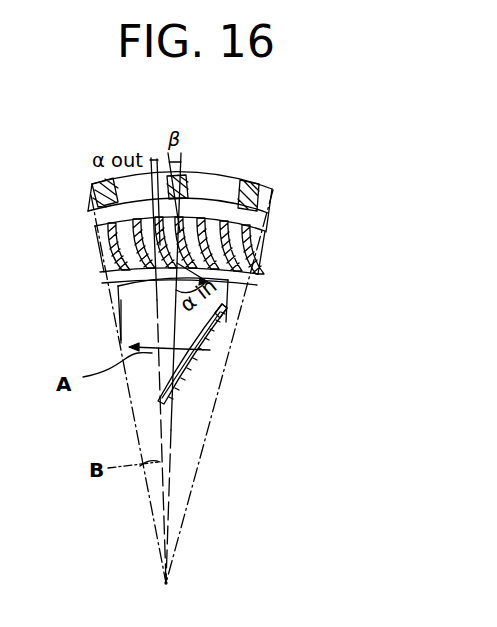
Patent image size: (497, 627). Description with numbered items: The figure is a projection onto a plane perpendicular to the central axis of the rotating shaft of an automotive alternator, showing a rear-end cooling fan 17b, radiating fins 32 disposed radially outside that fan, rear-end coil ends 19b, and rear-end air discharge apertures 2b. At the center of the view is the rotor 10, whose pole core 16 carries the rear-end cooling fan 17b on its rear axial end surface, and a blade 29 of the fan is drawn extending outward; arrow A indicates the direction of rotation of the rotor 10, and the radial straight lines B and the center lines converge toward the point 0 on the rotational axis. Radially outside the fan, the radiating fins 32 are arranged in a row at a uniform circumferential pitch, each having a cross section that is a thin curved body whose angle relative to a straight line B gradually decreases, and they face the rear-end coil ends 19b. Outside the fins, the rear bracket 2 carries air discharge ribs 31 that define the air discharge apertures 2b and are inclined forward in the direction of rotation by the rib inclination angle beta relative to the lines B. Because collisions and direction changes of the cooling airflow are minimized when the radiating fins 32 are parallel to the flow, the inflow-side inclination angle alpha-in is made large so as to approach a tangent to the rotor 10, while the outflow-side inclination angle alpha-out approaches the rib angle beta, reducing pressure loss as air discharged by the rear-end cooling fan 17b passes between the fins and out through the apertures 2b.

The rear bracket 2 is at (277, 193).
The air discharge apertures 2b is at (213, 186).
The air discharge ribs 31 is at (250, 182).
The radiating fins 32 is at (257, 247).
The rear-end coil ends 19b is at (93, 234).
The rotor 10 is at (119, 294).
The pole core 16 is at (133, 315).
The blade 29 is at (228, 316).
The rear-end cooling fan 17b is at (185, 362).
The rotation center 0 is at (166, 583).